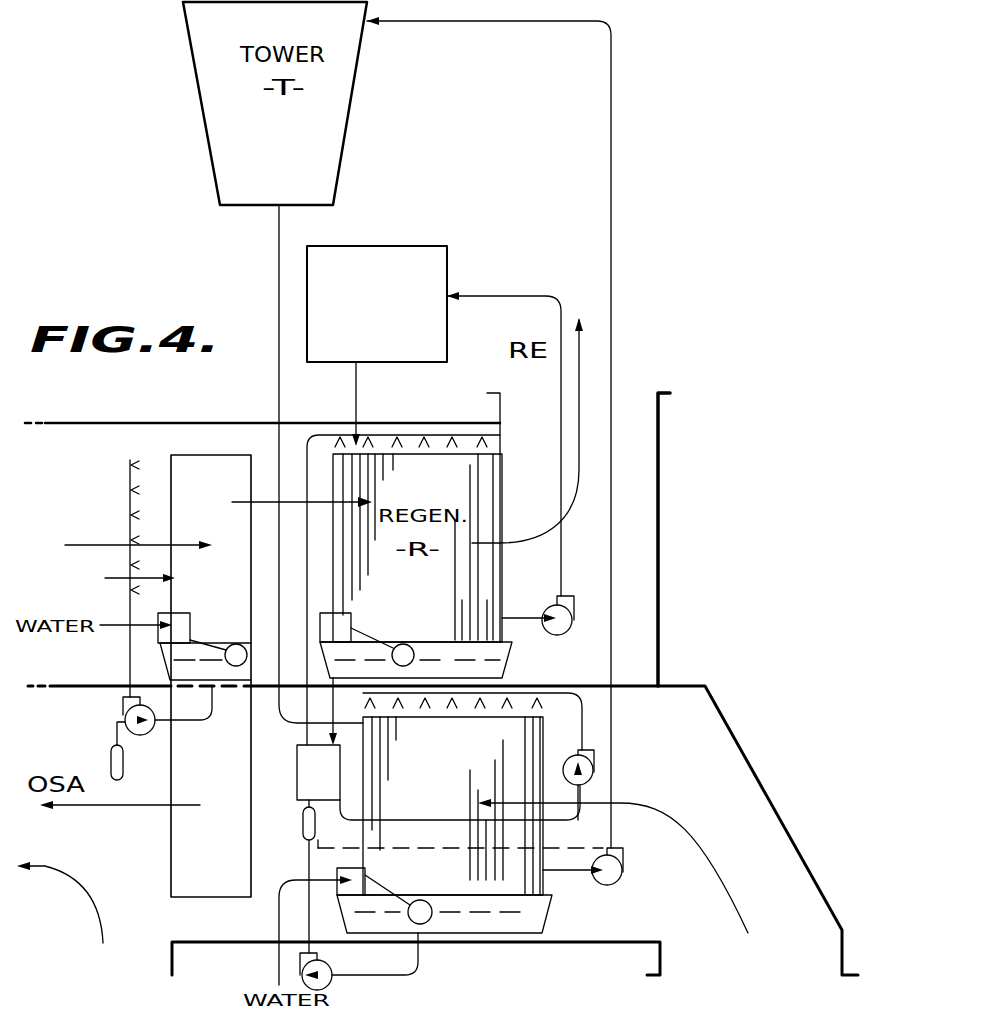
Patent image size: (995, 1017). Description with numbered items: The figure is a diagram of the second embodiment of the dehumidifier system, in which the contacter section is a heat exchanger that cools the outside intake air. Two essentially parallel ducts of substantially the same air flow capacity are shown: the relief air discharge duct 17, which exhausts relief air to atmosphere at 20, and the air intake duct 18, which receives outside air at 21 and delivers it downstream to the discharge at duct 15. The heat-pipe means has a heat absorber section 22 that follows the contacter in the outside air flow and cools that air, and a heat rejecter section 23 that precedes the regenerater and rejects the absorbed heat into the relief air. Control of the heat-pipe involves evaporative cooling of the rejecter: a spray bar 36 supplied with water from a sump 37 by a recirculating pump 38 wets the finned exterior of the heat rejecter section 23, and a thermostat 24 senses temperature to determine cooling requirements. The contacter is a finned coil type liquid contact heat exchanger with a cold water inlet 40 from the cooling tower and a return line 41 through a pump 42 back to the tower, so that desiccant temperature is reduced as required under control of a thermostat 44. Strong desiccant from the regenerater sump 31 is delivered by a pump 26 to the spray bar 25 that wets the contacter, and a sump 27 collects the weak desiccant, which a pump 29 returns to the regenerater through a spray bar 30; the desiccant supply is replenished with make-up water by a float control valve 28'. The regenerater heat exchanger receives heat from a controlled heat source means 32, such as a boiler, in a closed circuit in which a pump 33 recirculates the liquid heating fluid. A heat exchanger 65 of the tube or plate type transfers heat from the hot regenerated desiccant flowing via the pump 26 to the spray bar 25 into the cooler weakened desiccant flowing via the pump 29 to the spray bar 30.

The discharge duct 15 is at (86, 916).
The relief air discharge duct 17 is at (112, 526).
The air intake duct 18 is at (625, 897).
The relief air exhaust outlet 20 is at (634, 396).
The outside air entry 21 is at (808, 975).
The heat absorber section 22 is at (213, 897).
The heat rejecter section 23 is at (220, 455).
The thermostat 24 is at (111, 760).
The spray bar 25 is at (584, 703).
The pump 26 is at (598, 768).
The sump 27 is at (548, 916).
The float control valve 28' is at (385, 880).
The pump 29 is at (335, 988).
The spray bar 30 is at (440, 435).
The sump 31 is at (512, 663).
The controlled heat source means 32 is at (434, 421).
The pump 33 is at (556, 634).
The spray bar 36 is at (130, 502).
The sump 37 is at (160, 663).
The recirculating pump 38 is at (125, 712).
The cold water inlet 40 is at (368, 727).
The return line 41 is at (613, 208).
The pump 42 is at (624, 862).
The thermostat 44 is at (310, 835).
The heat exchanger 65 is at (305, 787).